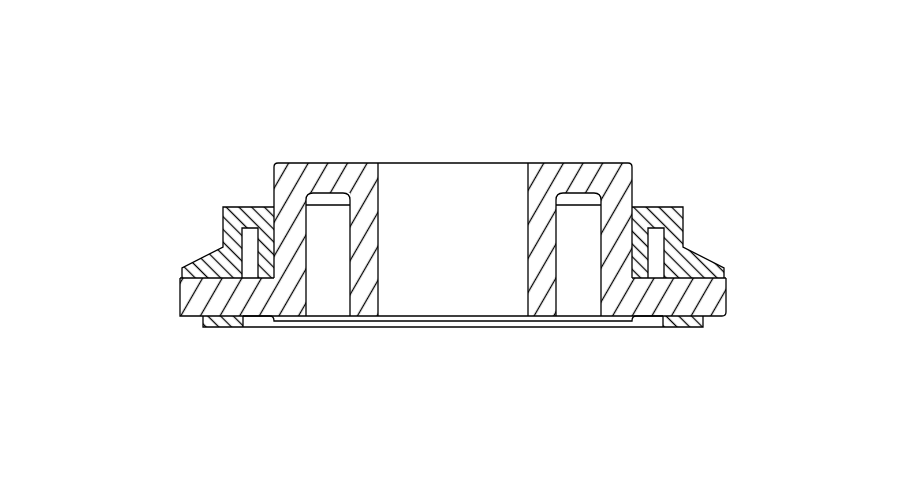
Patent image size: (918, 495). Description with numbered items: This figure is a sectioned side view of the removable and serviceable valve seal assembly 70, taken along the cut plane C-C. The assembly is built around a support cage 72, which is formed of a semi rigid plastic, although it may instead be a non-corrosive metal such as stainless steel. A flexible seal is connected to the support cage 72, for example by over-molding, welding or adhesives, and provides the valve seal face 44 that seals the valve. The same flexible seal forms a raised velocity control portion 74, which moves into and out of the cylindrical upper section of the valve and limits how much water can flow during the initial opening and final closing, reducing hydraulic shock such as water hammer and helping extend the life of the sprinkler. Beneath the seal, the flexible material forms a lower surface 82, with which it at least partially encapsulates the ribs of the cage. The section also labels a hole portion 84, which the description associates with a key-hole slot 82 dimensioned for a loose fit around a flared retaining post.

The valve seal assembly 70 is at (125, 96).
The support cage 72 is at (605, 162).
The velocity control portion 74 is at (685, 208).
The valve seal face 44 is at (200, 258).
The lower surface 82 is at (715, 295).
The hole portion 84 is at (247, 248).